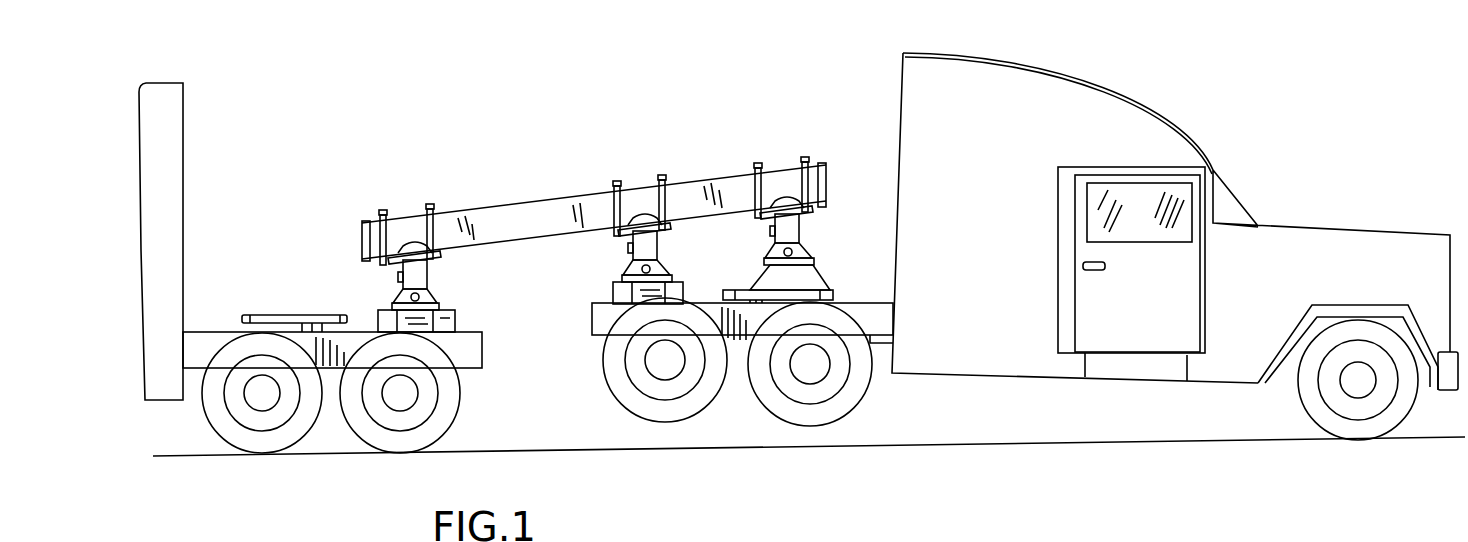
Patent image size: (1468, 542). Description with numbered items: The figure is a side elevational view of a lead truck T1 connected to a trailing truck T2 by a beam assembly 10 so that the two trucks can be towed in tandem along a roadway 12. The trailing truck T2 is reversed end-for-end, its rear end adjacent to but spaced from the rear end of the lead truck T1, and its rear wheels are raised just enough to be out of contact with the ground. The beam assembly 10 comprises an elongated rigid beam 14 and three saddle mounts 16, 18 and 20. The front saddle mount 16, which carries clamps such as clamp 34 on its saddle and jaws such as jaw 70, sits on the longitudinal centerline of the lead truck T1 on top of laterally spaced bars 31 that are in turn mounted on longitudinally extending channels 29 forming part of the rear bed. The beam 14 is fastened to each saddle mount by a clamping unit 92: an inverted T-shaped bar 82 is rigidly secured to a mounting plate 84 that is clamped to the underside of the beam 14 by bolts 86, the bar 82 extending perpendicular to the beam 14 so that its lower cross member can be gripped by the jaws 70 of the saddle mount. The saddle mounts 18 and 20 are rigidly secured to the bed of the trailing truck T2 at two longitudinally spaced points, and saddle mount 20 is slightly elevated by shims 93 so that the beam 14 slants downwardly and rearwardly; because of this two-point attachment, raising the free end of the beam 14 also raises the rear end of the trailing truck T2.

The beam assembly 10 is at (550, 134).
The roadway 12 is at (1220, 445).
The beam 14 is at (488, 212).
The front saddle mount 16 is at (396, 233).
The saddle mount 18 is at (614, 253).
The saddle mount 20 is at (822, 225).
The channels 29 is at (482, 357).
The bars 31 is at (457, 316).
The clamp 34 is at (815, 541).
The jaw 70 is at (858, 534).
The bar 82 is at (423, 265).
The mounting plate 84 is at (410, 252).
The bolts 86 is at (400, 248).
The clamping unit 92 is at (448, 220).
The shims 93 is at (835, 285).
The lead truck T1 is at (208, 216).
The trailing truck T2 is at (1175, 234).